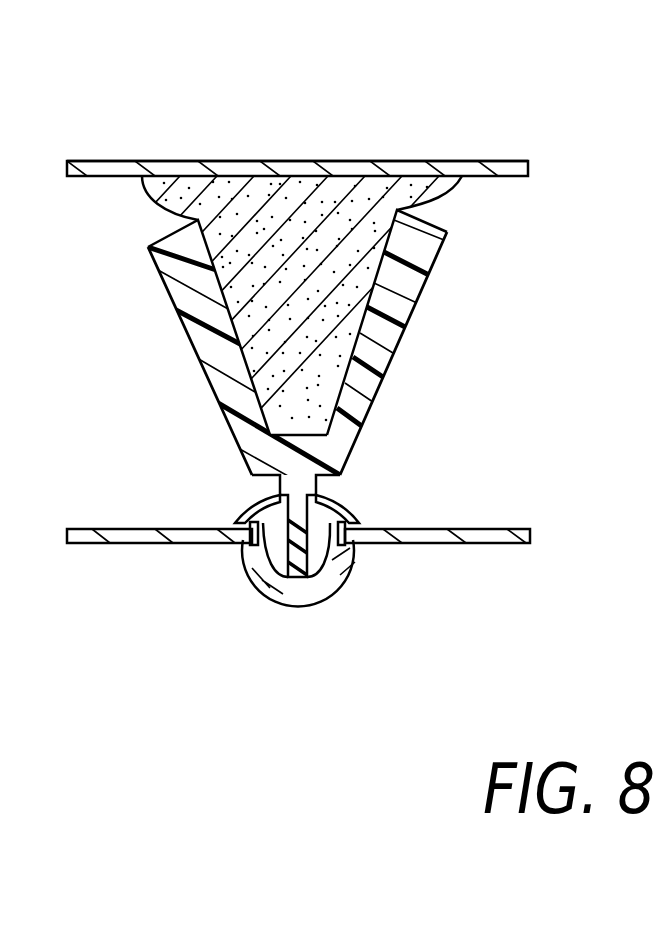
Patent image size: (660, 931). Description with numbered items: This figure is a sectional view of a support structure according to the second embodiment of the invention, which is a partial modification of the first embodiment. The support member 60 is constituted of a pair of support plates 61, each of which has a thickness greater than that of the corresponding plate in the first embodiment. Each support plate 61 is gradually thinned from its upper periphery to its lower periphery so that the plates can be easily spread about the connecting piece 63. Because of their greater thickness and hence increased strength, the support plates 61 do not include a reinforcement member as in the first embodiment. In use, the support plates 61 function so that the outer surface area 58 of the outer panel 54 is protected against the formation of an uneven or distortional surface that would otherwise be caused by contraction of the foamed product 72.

The outer panel 54 is at (448, 161).
The outer surface area 58 is at (245, 161).
The foamed product 72 is at (301, 194).
The support member 60 is at (291, 393).
The support plate 61 is at (217, 352).
The connecting piece 63 is at (300, 463).